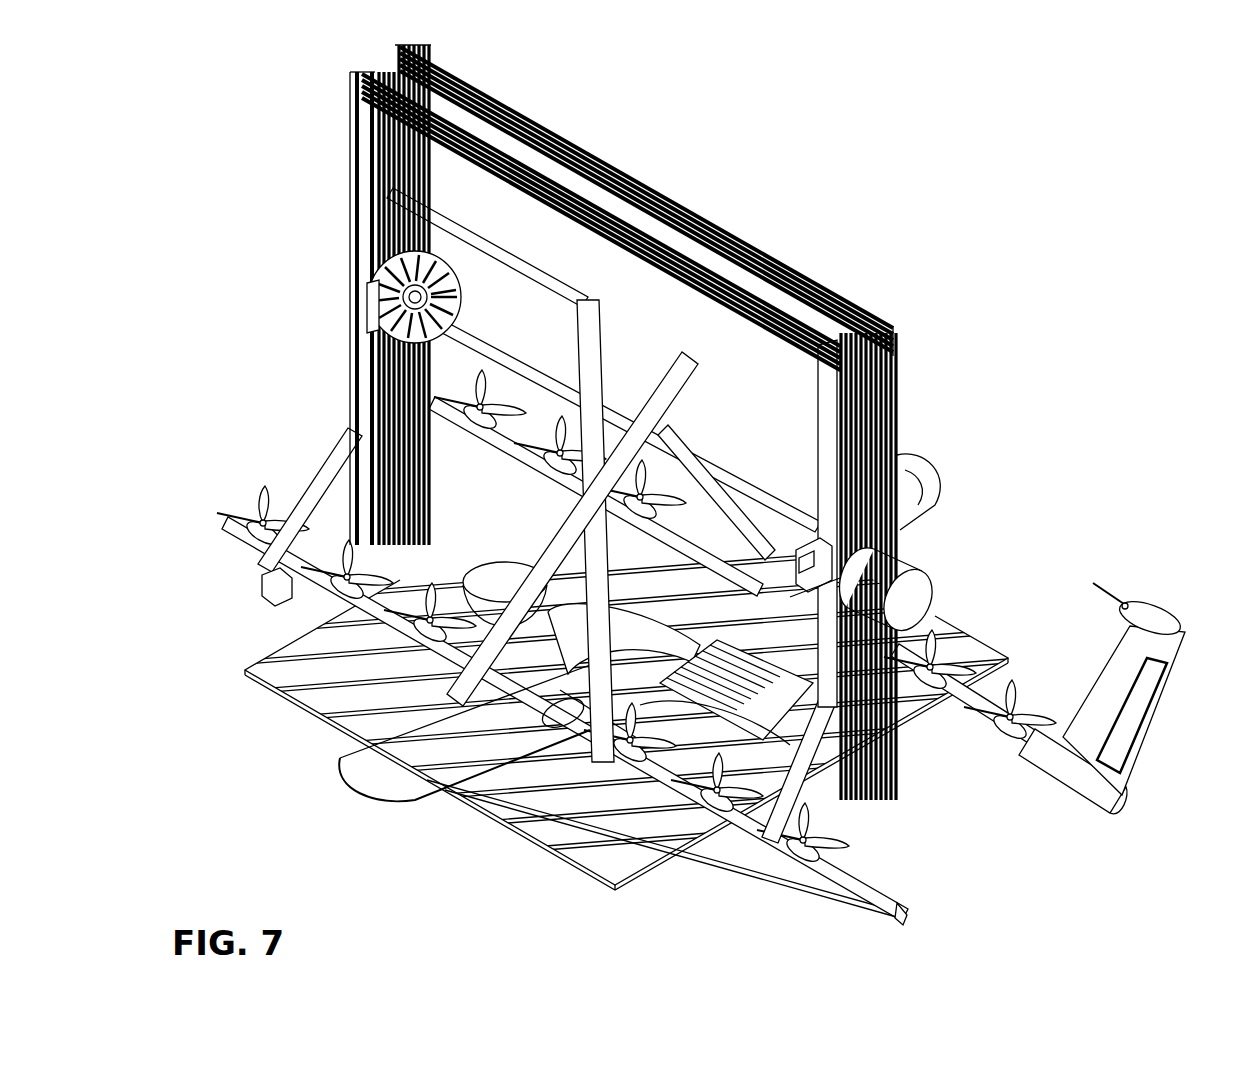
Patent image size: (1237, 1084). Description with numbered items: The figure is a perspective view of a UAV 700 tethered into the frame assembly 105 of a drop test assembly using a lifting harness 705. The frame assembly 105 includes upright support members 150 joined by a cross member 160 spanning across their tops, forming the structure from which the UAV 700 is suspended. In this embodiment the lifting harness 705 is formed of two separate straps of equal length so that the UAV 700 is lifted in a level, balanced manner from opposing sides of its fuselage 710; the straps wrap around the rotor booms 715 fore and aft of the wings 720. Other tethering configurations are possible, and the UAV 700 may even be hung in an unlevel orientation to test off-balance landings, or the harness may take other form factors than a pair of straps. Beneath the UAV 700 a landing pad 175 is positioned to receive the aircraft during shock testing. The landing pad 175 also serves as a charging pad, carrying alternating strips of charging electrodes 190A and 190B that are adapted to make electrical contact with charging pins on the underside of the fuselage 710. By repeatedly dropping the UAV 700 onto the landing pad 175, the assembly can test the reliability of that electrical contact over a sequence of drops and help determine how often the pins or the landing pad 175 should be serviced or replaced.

The frame assembly 105 is at (617, 444).
The support members 150 is at (421, 427).
The cross member 160 is at (495, 134).
The landing pad 175 is at (340, 693).
The charging electrode 190A is at (505, 805).
The charging electrode 190B is at (552, 838).
The UAV 700 is at (725, 667).
The lifting harness 705 is at (597, 305).
The fuselage 710 is at (660, 643).
The rotor booms 715 is at (1063, 778).
The wings 720 is at (368, 772).